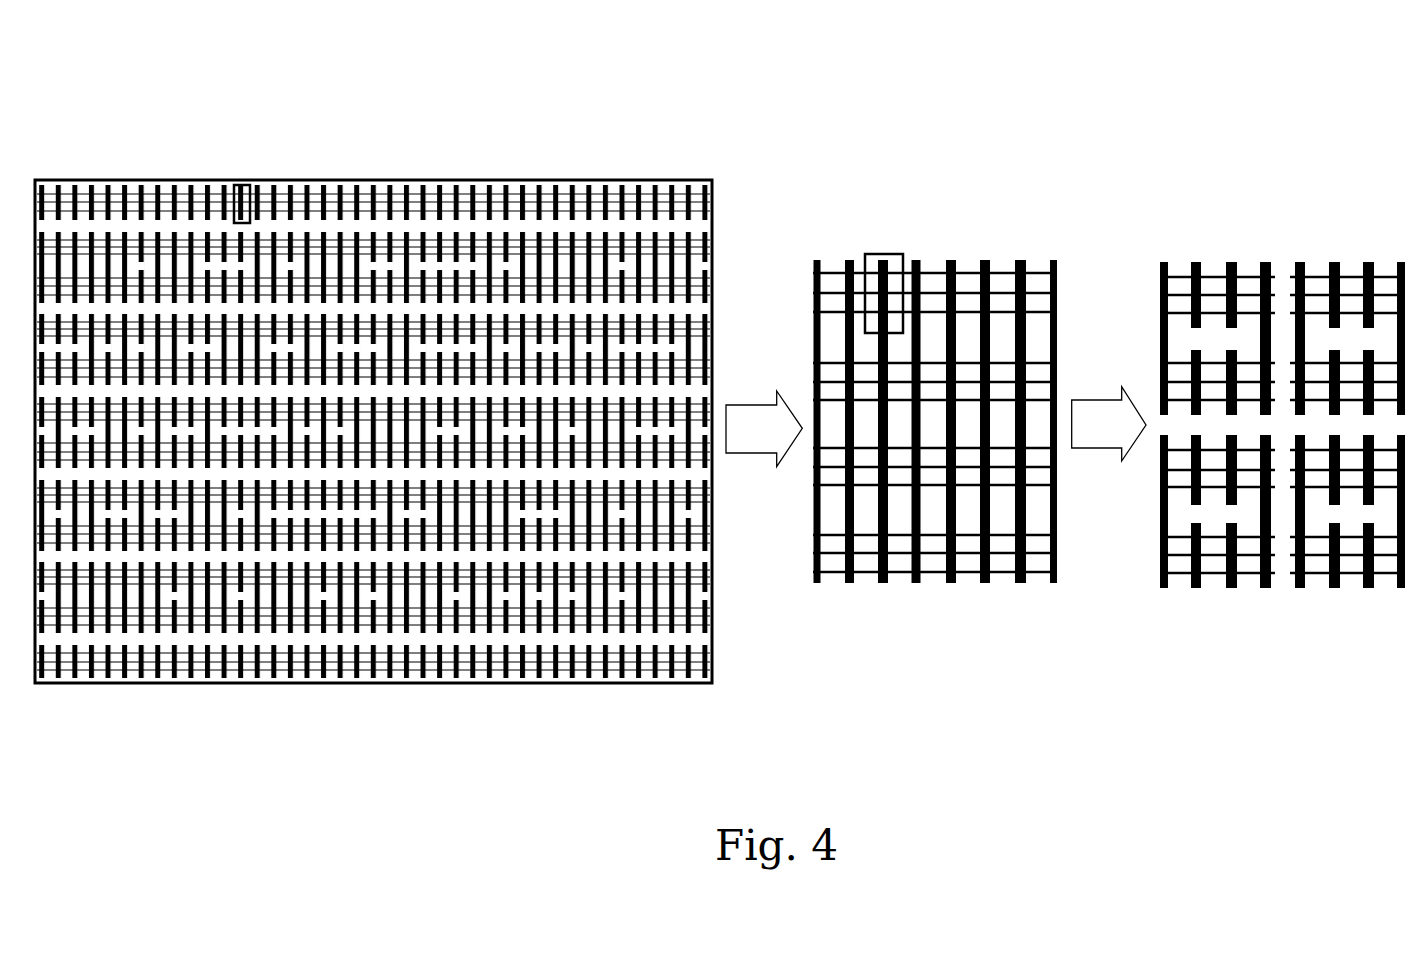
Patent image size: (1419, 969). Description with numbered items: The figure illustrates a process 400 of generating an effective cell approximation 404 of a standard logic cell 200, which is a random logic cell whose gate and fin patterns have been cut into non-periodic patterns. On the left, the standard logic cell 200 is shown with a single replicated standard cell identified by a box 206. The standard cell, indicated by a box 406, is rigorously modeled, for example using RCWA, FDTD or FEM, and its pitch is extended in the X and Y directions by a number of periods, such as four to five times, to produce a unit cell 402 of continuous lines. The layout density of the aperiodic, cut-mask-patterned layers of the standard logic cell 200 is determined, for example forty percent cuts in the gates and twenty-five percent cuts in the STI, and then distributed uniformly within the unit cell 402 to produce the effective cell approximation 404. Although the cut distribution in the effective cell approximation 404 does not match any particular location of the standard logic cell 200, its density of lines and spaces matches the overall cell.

The process 400 is at (1195, 60).
The standard logic cell 200 is at (505, 178).
The box 206 is at (243, 181).
The unit cell 402 is at (970, 202).
The effective cell approximation 404 is at (1303, 222).
The box 406 is at (882, 253).